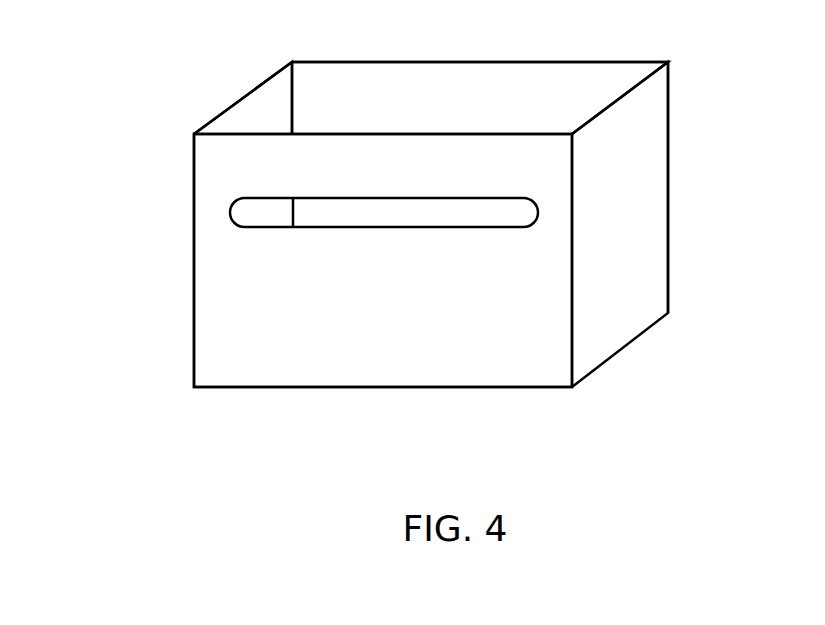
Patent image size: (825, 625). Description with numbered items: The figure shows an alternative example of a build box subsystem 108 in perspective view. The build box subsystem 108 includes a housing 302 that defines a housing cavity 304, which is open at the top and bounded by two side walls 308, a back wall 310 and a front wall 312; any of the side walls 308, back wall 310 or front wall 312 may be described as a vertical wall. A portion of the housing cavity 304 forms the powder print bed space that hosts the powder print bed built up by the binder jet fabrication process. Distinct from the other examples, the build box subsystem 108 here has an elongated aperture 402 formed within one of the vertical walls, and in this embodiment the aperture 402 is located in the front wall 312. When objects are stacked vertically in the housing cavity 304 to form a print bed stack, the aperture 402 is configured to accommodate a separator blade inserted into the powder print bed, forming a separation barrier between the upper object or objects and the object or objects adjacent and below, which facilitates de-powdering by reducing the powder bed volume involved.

The build box subsystem 108 is at (667, 361).
The housing 302 is at (668, 127).
The housing cavity 304 is at (545, 74).
The side walls 308 is at (431, 187).
The back wall 310 is at (450, 97).
The front wall 312 is at (360, 325).
The aperture 402 is at (343, 212).